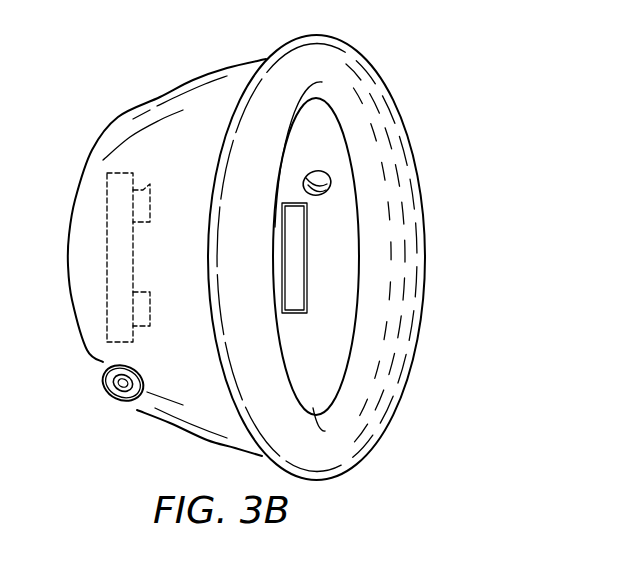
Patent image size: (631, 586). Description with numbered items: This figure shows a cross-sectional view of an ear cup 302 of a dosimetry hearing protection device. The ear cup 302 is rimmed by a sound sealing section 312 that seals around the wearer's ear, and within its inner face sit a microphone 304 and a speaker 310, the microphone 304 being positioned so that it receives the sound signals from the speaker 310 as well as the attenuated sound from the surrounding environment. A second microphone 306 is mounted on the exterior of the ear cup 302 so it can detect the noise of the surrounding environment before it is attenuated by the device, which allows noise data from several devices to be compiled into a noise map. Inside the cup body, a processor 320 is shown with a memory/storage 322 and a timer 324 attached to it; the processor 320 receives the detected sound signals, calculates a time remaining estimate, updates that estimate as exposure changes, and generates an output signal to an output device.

The ear cup 302 is at (170, 55).
The microphone 304 is at (332, 180).
The second microphone 306 is at (115, 393).
The speaker 310 is at (293, 248).
The sound sealing section 312 is at (336, 48).
The processor 320 is at (108, 240).
The memory/storage 322 is at (150, 184).
The timer 324 is at (150, 326).